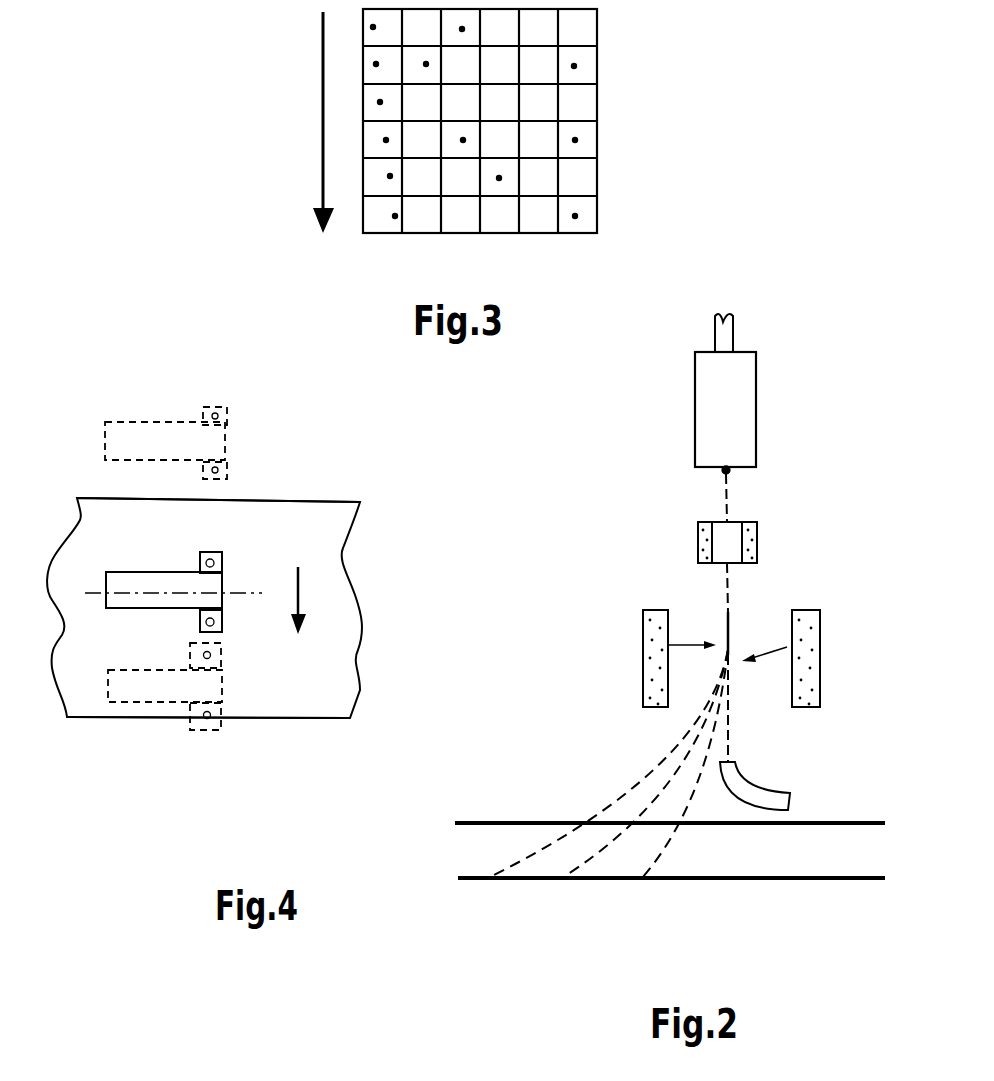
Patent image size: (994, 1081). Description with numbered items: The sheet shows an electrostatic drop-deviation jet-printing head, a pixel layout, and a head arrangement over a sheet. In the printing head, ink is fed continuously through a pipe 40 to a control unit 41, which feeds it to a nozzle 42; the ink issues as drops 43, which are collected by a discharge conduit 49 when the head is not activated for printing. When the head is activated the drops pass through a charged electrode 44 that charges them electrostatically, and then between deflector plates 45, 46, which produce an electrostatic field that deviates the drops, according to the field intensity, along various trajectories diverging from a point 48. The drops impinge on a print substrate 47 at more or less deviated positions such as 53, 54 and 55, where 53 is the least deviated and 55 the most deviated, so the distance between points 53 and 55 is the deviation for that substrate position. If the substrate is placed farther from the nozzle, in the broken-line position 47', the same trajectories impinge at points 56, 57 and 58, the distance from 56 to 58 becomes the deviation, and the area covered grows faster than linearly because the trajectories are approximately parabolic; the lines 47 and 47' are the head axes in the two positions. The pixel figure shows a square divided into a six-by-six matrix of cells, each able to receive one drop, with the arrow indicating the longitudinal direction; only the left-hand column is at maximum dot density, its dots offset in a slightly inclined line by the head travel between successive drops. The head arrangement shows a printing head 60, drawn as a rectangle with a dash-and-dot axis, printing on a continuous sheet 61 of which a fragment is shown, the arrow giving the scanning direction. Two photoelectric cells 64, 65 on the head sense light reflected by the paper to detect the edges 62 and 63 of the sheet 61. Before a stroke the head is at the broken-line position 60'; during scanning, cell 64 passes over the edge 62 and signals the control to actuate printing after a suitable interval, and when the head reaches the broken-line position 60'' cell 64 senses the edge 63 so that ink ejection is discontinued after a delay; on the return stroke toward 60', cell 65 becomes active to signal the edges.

In FIG. 2, the pipe 40 is at (735, 332).
In FIG. 2, the control unit 41 is at (750, 412).
In FIG. 2, the nozzle 42 is at (730, 475).
In FIG. 2, the ink drops 43 is at (731, 607).
In FIG. 2, the charged electrode 44 is at (757, 547).
In FIG. 2, the deflector plate 45 is at (820, 658).
In FIG. 2, the deflector plate 46 is at (643, 657).
In FIG. 2, the print substrate 47 is at (679, 790).
In FIG. 2, the print substrate in farther position 47' is at (681, 928).
In FIG. 2, the divergence point 48 is at (727, 638).
In FIG. 2, the discharge conduit 49 is at (750, 782).
In FIG. 2, the least deviated impingement point 53 is at (678, 830).
In FIG. 2, the intermediate impingement point 54 is at (627, 830).
In FIG. 2, the most deviated impingement point 55 is at (575, 830).
In FIG. 2, the least deviated impingement point on farther substrate 56 is at (642, 880).
In FIG. 2, the intermediate impingement point on farther substrate 57 is at (562, 880).
In FIG. 2, the most deviated impingement point on farther substrate 58 is at (488, 880).
In FIG. 4, the printing head 60 is at (173, 559).
In FIG. 4, the starting position of printing head 60' is at (213, 443).
In FIG. 4, the end position of printing head 60'' is at (218, 720).
In FIG. 4, the continuous sheet 61 is at (328, 546).
In FIG. 4, the first edge of paper sheet 62 is at (307, 502).
In FIG. 4, the second edge of paper sheet 63 is at (323, 722).
In FIG. 4, the photoelectric cell 64 is at (218, 617).
In FIG. 4, the photoelectric cell 65 is at (217, 563).